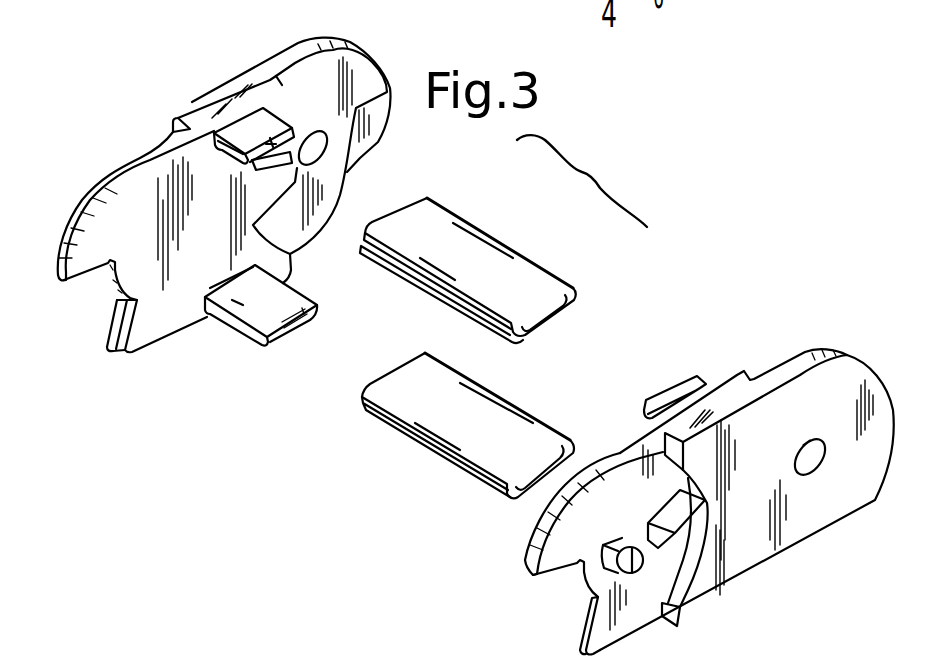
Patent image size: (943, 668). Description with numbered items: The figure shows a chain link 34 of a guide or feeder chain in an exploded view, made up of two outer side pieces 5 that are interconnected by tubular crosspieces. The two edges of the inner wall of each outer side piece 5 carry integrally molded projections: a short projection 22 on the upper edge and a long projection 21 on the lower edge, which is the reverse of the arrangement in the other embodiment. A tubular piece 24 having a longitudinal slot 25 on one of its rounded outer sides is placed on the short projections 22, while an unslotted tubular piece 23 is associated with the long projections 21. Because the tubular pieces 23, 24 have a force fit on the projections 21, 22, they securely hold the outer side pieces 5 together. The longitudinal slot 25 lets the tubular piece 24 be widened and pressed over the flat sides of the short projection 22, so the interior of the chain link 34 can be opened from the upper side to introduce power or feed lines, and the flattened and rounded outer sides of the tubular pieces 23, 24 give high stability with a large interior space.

The outer side piece 5 is at (763, 557).
The long projection 21 is at (257, 308).
The short projection 22 is at (240, 130).
The unslotted tubular piece 23 is at (498, 415).
The tubular piece 24 is at (490, 252).
The longitudinal slot 25 is at (417, 277).
The chain link 34 is at (370, 444).